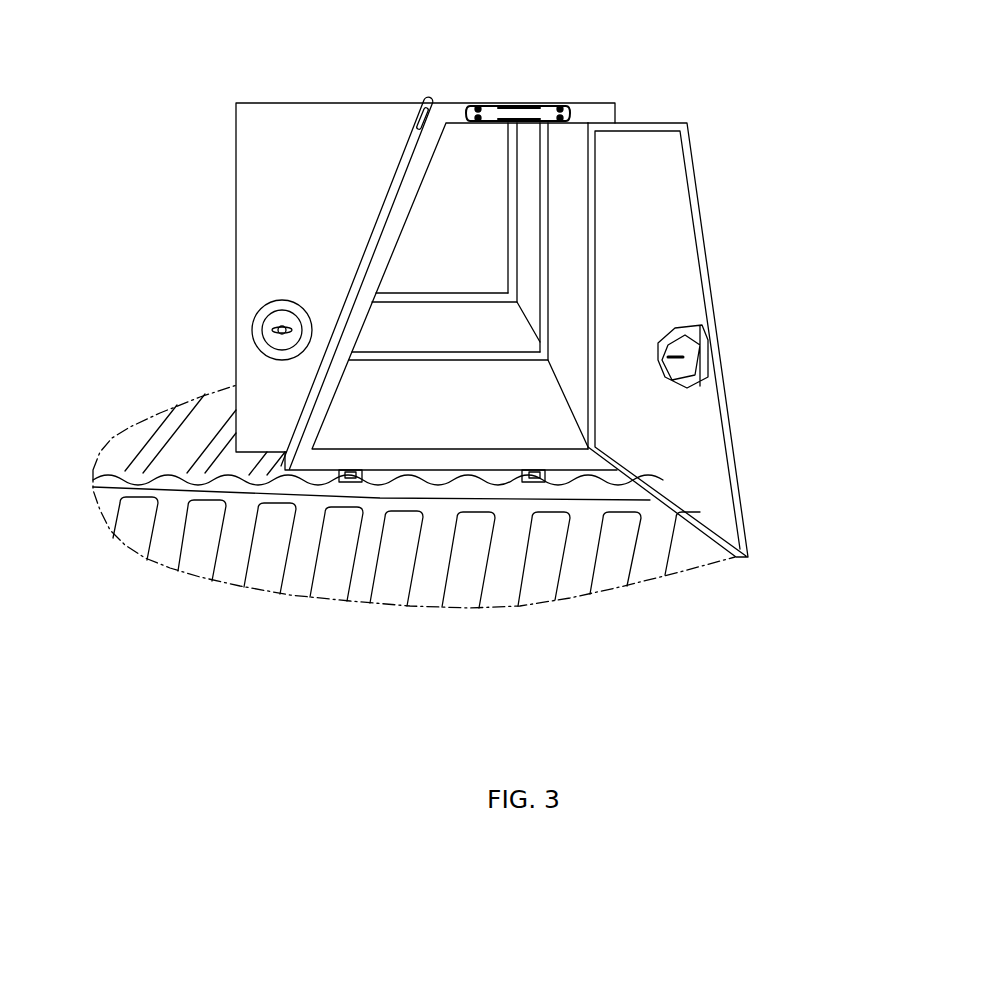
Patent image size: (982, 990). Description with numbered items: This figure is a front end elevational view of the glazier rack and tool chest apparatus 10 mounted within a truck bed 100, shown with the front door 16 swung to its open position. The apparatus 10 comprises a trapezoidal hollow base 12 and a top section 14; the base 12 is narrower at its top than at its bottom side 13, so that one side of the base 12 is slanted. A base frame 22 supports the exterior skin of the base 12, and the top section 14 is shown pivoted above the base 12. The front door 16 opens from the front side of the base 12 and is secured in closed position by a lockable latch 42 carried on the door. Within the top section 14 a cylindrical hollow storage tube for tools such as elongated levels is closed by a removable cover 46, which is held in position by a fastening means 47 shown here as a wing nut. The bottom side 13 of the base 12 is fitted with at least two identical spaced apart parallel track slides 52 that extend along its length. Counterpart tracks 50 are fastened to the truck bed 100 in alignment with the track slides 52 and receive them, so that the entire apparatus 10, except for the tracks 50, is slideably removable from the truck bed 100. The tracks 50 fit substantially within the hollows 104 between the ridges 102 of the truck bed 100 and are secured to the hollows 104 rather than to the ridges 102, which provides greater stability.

The glazier rack and tool chest apparatus 10 is at (365, 277).
The trapezoidal hollow base 12 is at (572, 92).
The bottom side 13 is at (550, 457).
The top section 14 is at (232, 160).
The front door 16 is at (737, 494).
The base frame 22 is at (382, 206).
The latches 42 is at (724, 345).
The removable cover 46 is at (280, 310).
The fastening means 47 is at (272, 330).
The tracks 50 is at (347, 483).
The track slides 52 is at (532, 483).
The truck bed 100 is at (94, 508).
The ridges 102 is at (213, 482).
The hollows 104 is at (166, 492).